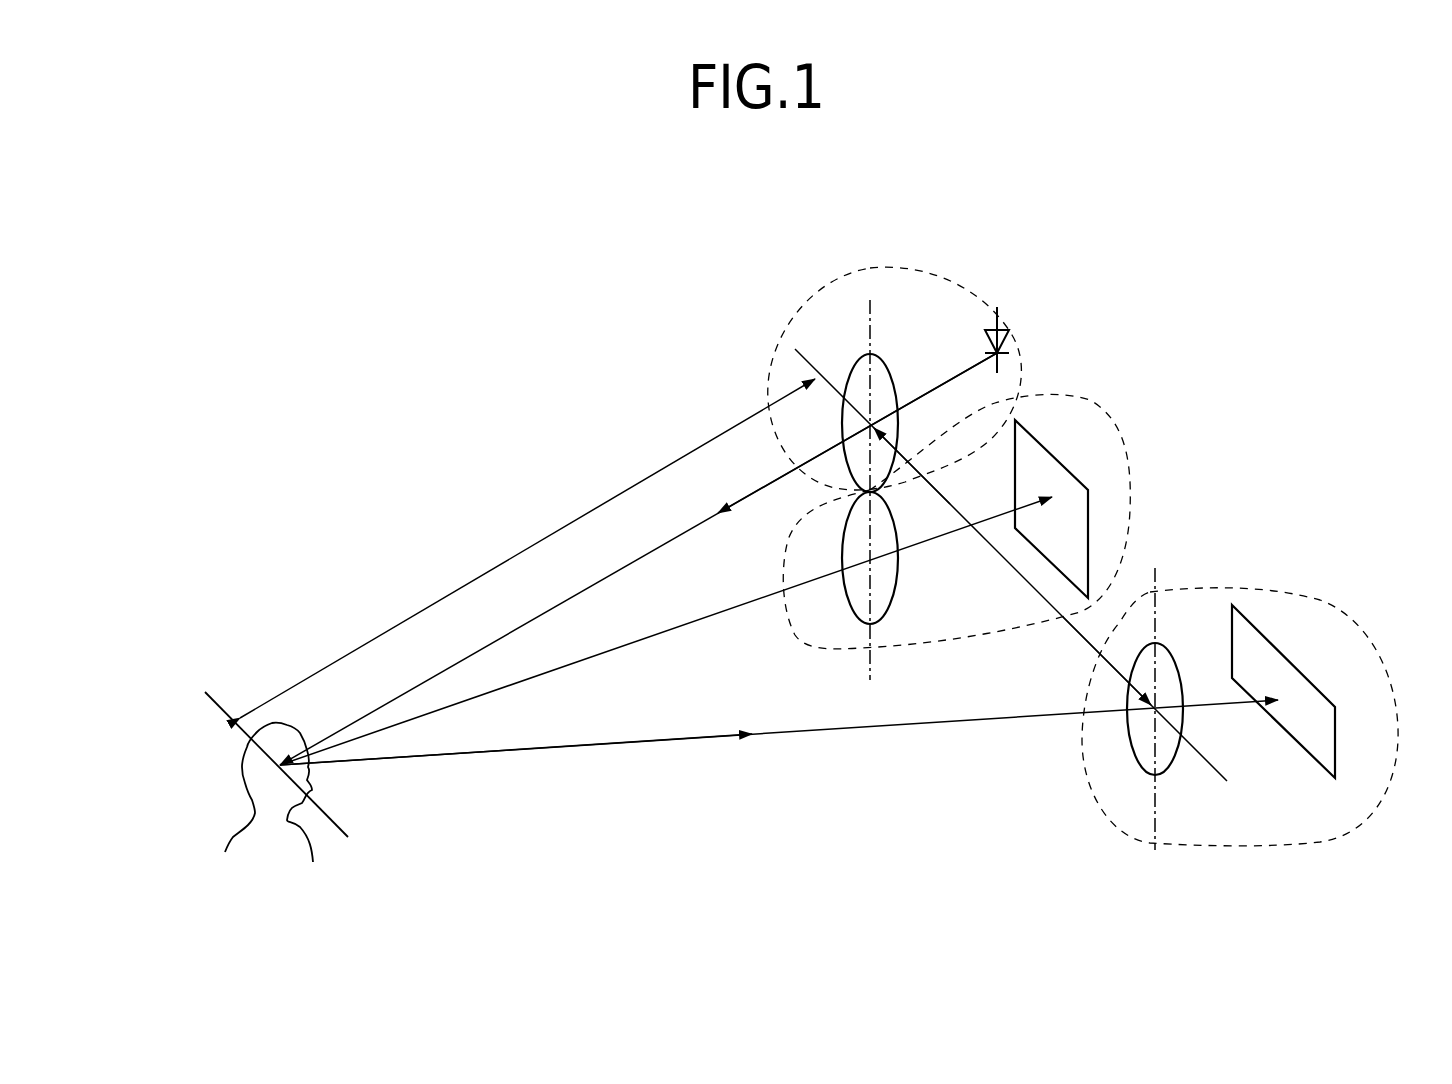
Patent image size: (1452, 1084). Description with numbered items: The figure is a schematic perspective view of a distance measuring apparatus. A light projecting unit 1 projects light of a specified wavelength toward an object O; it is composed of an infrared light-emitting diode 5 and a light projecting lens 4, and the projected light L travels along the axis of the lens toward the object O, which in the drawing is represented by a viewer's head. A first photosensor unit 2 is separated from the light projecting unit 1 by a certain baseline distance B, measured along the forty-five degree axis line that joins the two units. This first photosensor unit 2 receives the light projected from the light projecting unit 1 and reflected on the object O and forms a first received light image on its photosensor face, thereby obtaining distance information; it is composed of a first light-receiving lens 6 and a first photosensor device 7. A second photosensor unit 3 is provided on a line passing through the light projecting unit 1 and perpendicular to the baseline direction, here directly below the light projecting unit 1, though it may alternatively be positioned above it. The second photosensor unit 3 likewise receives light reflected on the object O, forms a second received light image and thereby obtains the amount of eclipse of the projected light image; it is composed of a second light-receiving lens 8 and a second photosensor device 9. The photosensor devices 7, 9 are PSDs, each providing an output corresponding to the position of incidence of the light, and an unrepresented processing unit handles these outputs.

The light projecting unit 1 is at (970, 268).
The first photosensor unit 2 is at (1204, 598).
The second photosensor unit 3 is at (1118, 416).
The light projecting lens 4 is at (886, 365).
The infrared light-emitting diode 5 is at (1001, 307).
The first light-receiving lens 6 is at (1170, 762).
The first photosensor device 7 is at (1336, 737).
The second light-receiving lens 8 is at (895, 590).
The second photosensor device 9 is at (1035, 430).
The object O is at (285, 735).
The illumination light beam L is at (638, 559).
The baseline distance B is at (1083, 640).